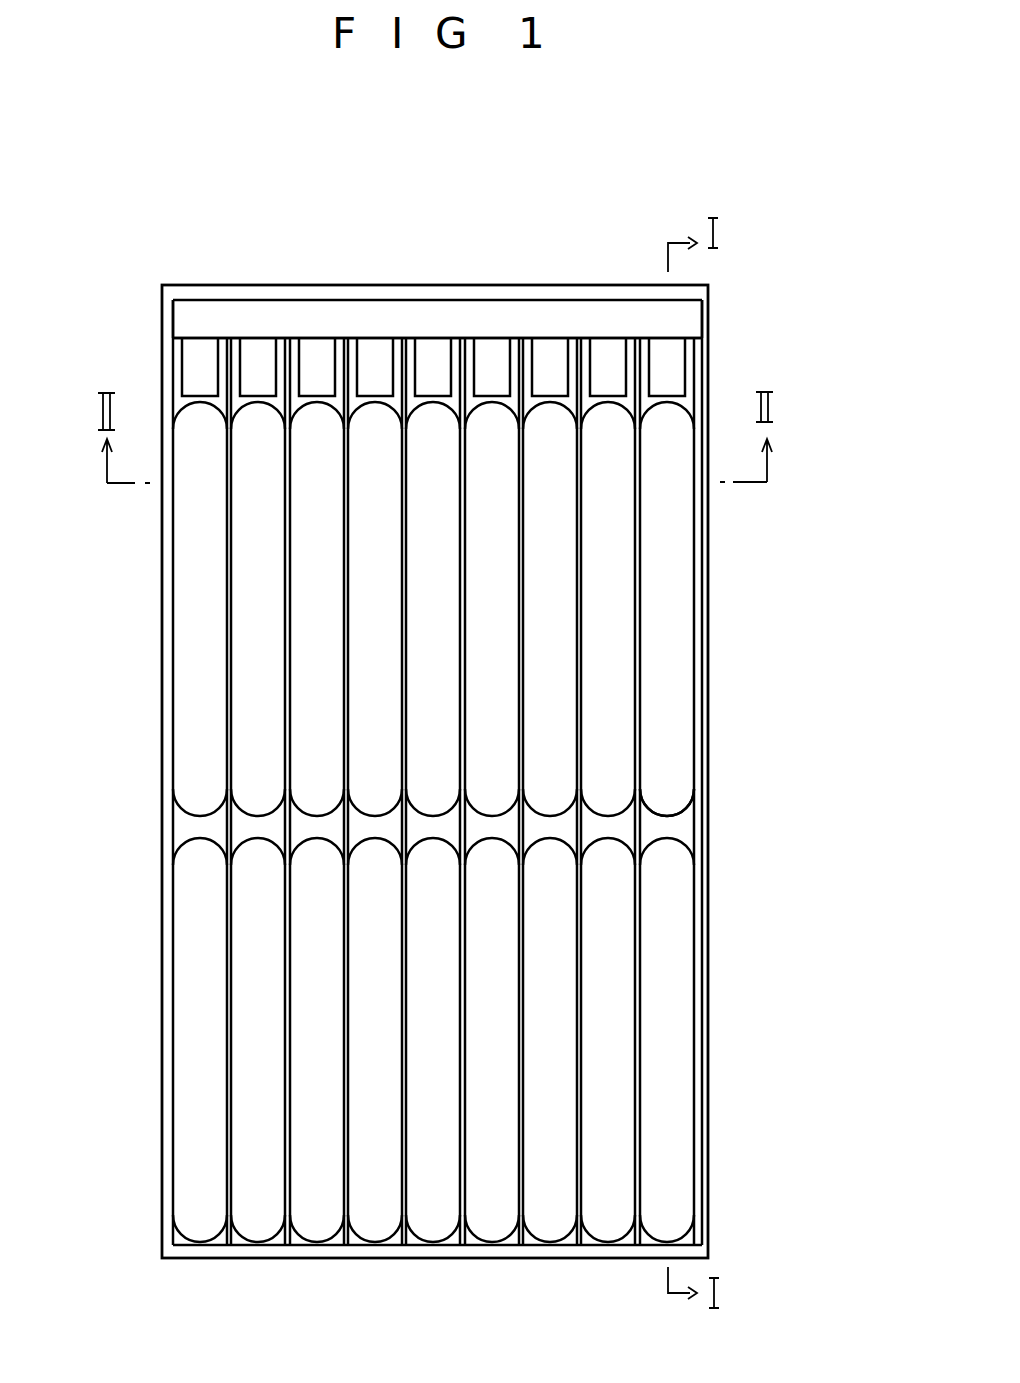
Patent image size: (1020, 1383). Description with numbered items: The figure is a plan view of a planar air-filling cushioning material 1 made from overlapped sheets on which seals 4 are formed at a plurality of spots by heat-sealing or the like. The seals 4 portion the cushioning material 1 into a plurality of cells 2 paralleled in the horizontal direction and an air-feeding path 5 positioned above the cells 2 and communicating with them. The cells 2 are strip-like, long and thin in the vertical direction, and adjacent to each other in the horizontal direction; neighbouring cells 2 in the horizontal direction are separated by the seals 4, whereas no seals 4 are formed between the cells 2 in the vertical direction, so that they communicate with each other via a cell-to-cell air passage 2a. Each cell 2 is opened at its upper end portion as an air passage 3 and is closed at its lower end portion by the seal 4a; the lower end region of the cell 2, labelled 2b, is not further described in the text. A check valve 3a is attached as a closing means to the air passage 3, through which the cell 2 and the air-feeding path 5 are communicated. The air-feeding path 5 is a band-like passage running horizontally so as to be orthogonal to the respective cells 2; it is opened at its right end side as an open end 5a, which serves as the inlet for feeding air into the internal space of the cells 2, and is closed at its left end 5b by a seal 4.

The air-filling cushioning material 1 is at (146, 1169).
The cell 2 is at (673, 619).
The cell-to-cell air passage 2a is at (673, 822).
The lower end portion of cell 2b is at (667, 1226).
The air passage 3 is at (668, 338).
The check valve 3a is at (672, 362).
The seal 4 is at (358, 290).
The seal 4a is at (350, 1250).
The air-feeding path 5 is at (430, 310).
The open end 5a is at (678, 315).
The left end 5b is at (205, 312).